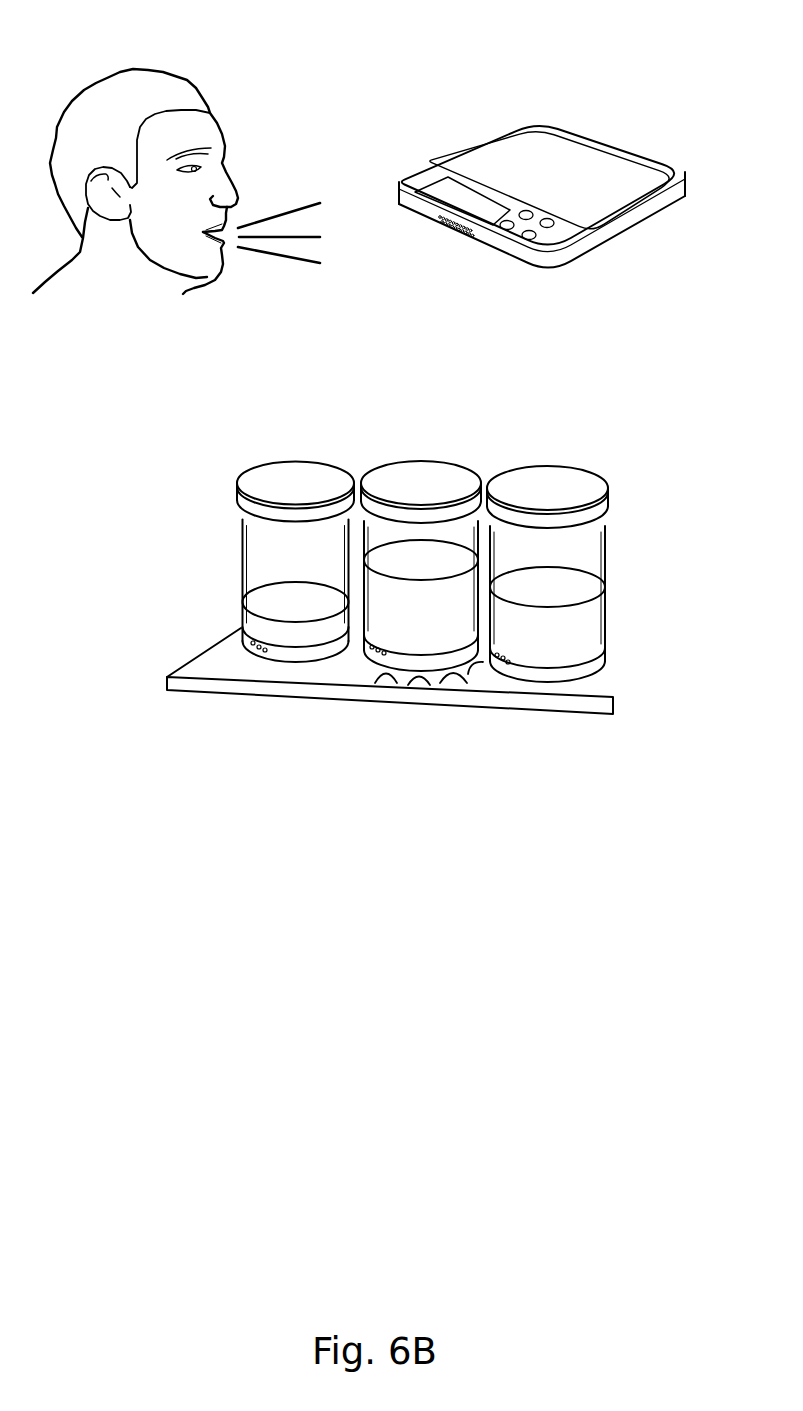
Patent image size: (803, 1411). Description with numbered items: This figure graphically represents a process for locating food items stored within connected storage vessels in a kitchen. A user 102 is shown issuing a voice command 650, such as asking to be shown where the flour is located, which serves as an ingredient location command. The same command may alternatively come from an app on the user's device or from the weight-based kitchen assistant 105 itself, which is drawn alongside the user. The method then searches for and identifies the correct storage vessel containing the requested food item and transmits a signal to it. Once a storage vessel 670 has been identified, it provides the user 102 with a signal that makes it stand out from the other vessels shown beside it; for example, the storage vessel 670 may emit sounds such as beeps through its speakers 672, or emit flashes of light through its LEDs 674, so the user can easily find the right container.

The user 102 is at (187, 80).
The voice command 650 is at (287, 213).
The weight-based kitchen assistant 105 is at (610, 243).
The storage vessel 670 is at (402, 672).
The speakers 672 is at (358, 655).
The LEDs 674 is at (465, 680).